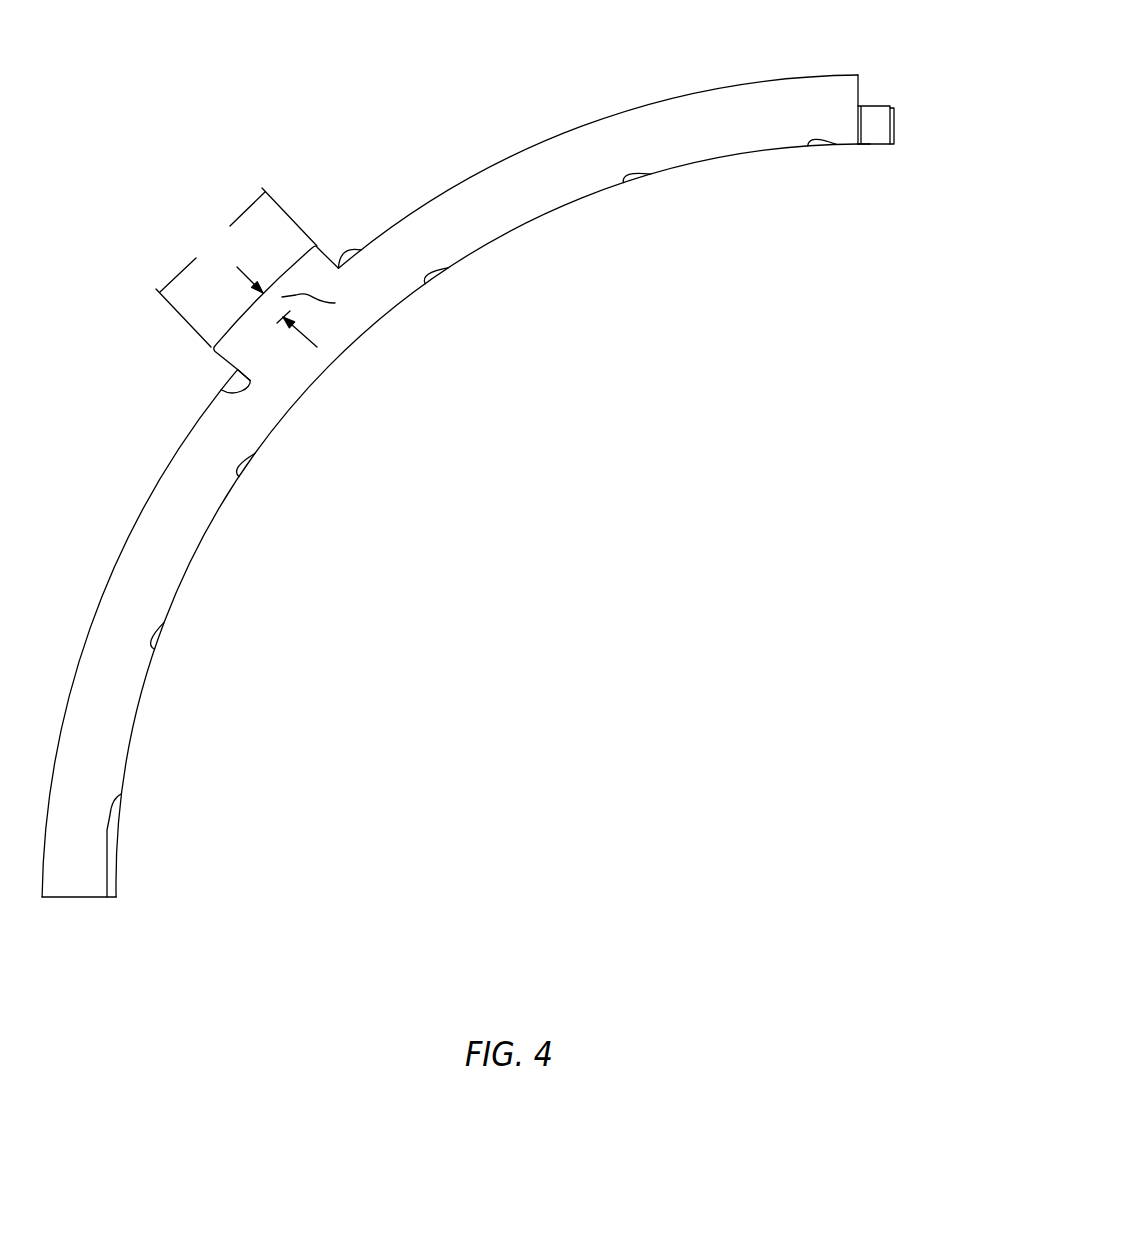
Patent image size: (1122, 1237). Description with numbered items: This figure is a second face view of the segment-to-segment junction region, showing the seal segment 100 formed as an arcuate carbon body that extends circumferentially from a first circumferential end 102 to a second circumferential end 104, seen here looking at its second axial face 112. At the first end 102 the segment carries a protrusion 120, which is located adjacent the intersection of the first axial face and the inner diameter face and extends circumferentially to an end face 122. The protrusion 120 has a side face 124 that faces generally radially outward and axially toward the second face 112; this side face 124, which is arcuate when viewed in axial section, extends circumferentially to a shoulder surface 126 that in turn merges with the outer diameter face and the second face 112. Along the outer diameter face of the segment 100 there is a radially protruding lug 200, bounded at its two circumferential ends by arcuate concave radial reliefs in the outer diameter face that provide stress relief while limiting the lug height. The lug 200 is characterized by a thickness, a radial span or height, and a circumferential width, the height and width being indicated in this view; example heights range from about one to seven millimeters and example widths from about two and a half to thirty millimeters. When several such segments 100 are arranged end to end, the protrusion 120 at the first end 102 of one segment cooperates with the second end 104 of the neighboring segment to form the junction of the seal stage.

The seal segment 100 is at (502, 507).
The first circumferential end 102 is at (877, 132).
The second circumferential end 104 is at (77, 918).
The second axial face 112 is at (183, 527).
The protrusion 120 is at (868, 146).
The end face 122 is at (895, 120).
The side face 124 is at (877, 108).
The shoulder surface 126 is at (862, 86).
The lug 200 is at (331, 242).